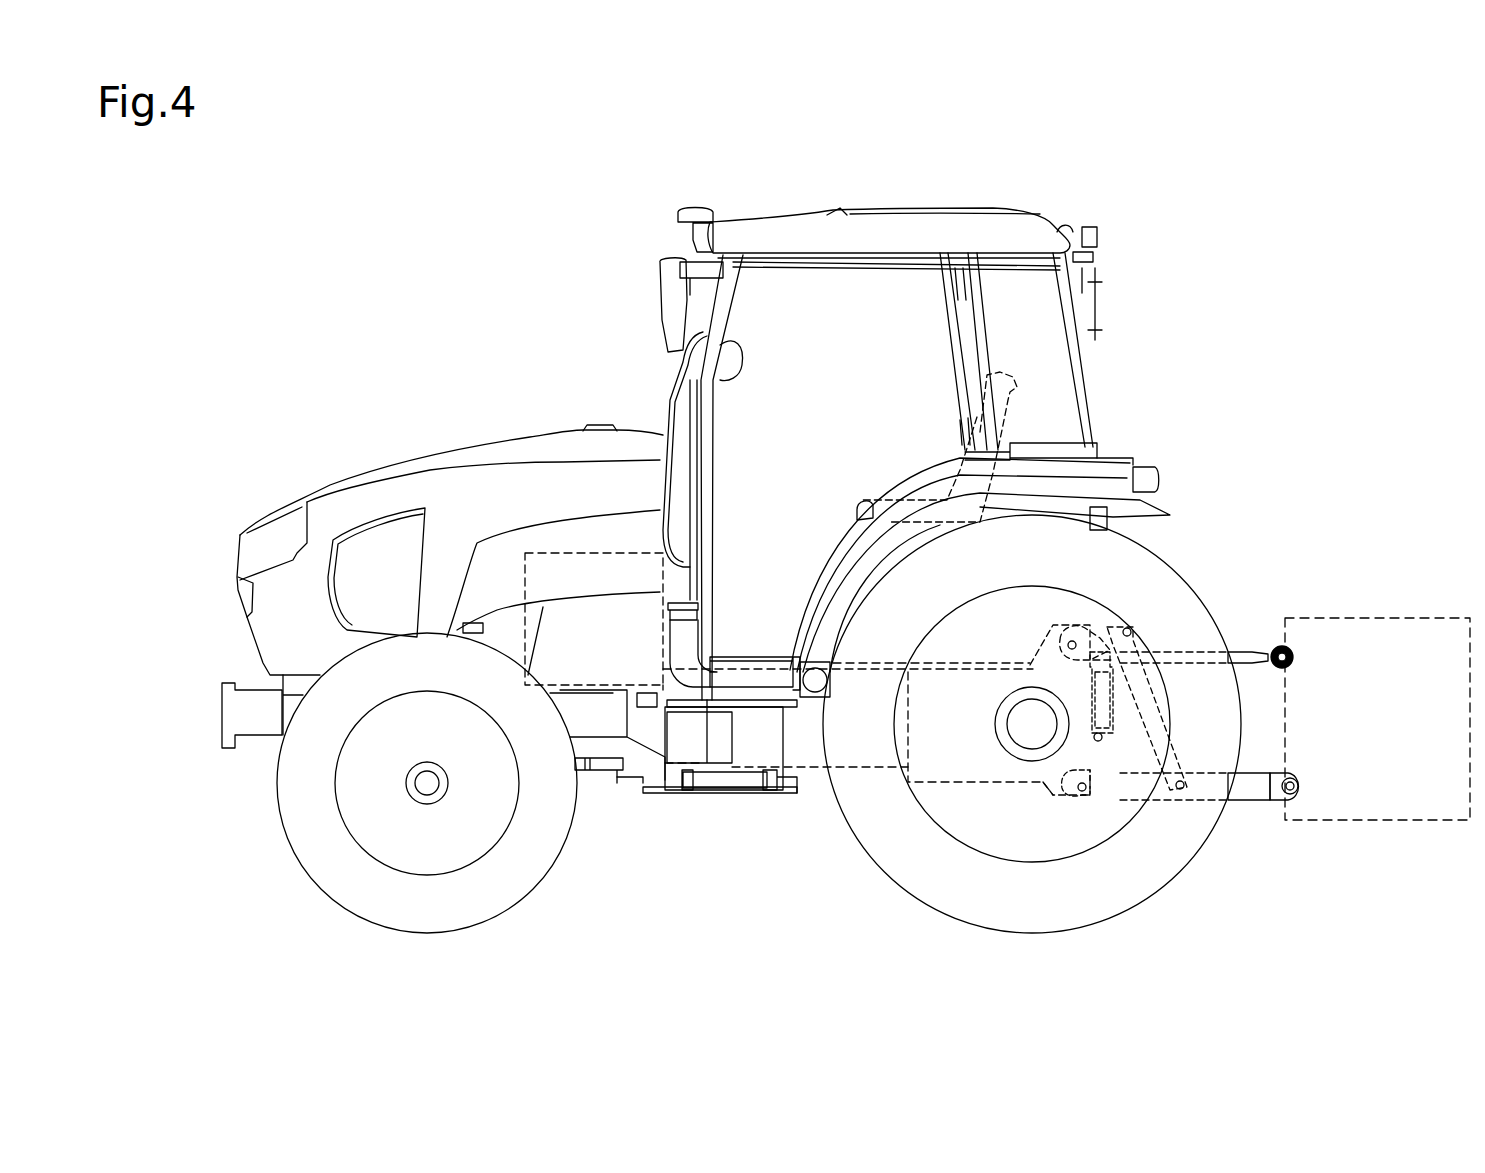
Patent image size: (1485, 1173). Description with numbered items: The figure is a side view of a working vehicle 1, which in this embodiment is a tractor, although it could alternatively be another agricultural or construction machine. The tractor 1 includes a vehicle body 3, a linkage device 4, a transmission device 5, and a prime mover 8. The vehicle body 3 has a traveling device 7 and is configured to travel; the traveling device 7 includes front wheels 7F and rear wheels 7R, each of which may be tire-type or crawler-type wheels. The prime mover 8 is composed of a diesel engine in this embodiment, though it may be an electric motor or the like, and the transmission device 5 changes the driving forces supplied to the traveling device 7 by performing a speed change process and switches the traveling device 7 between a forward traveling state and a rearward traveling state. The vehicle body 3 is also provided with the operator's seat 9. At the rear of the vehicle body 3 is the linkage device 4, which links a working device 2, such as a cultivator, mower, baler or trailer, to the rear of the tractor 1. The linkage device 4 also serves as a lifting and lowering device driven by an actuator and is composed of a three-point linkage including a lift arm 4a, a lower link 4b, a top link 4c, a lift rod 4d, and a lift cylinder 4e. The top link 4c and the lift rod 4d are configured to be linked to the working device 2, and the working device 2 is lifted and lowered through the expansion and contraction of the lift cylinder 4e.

The working vehicle 1 is at (525, 283).
The working device 2 is at (1393, 617).
The vehicle body 3 is at (605, 758).
The linkage device 4 is at (1230, 595).
The lift arm 4a is at (1102, 627).
The lower link 4b is at (1252, 773).
The top link 4c is at (1240, 647).
The lift rod 4d is at (1172, 760).
The lift cylinder 4e is at (1064, 745).
The transmission device 5 is at (858, 768).
The traveling device 7 is at (731, 744).
The front wheels 7F is at (302, 868).
The rear wheels 7R is at (1108, 918).
The prime mover 8 is at (563, 553).
The operator's seat 9 is at (1017, 413).